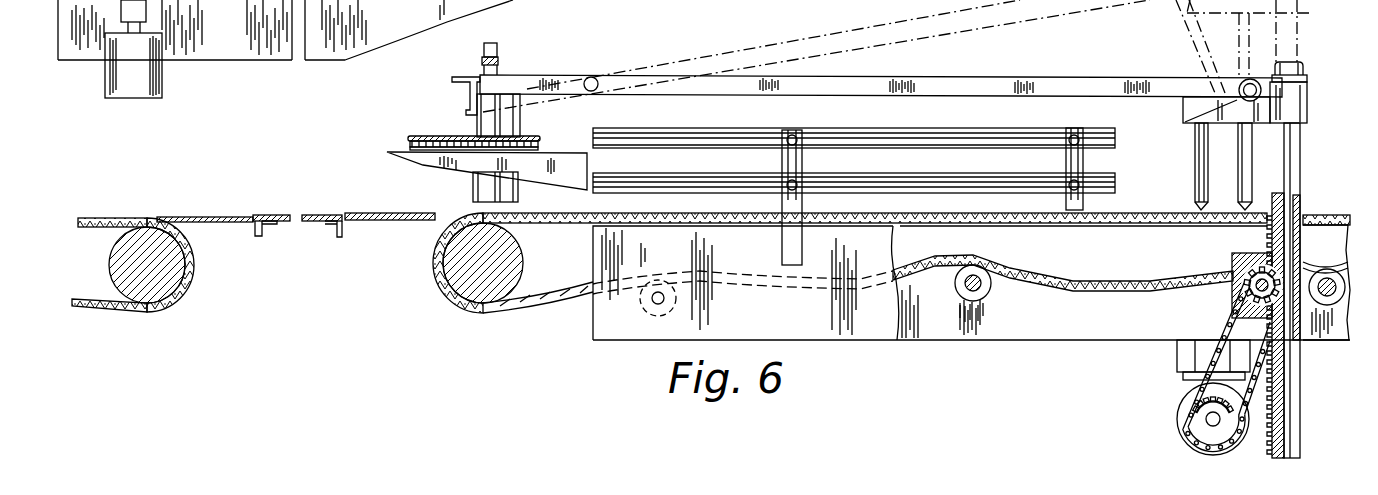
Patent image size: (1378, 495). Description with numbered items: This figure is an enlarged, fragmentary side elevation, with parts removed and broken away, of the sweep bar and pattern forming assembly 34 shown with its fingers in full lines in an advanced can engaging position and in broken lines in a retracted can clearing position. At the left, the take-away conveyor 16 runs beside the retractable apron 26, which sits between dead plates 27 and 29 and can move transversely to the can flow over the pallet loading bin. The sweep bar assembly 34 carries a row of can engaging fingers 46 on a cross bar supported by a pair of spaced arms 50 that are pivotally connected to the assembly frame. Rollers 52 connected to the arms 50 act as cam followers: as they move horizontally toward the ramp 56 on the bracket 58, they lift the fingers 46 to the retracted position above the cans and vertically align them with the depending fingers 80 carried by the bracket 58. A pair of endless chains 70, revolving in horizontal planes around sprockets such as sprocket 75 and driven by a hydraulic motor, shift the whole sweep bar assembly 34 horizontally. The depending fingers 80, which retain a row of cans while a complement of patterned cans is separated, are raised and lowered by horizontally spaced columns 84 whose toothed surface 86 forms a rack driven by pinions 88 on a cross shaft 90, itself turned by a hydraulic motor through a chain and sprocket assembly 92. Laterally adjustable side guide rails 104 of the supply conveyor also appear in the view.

The take-away conveyor 16 is at (100, 227).
The retractable apron 26 is at (318, 214).
The dead plate 27 is at (226, 197).
The dead plate 29 is at (415, 220).
The sweep bar and pattern forming assembly 34 is at (764, 36).
The can engaging fingers 46 is at (1205, 48).
The arms 50 is at (996, 62).
The rollers 52 is at (1262, 90).
The ramp 56 is at (1195, 105).
The bracket 58 is at (1263, 112).
The endless chains 70 is at (433, 140).
The sprocket 75 is at (521, 131).
The depending fingers 80 is at (1203, 170).
The columns 84 is at (1290, 390).
The toothed surface 86 is at (1274, 425).
The pinions 88 is at (1240, 272).
The cross shaft 90 is at (1237, 292).
The chain and sprocket assembly 92 is at (1167, 435).
The side guide rails 104 is at (788, 159).